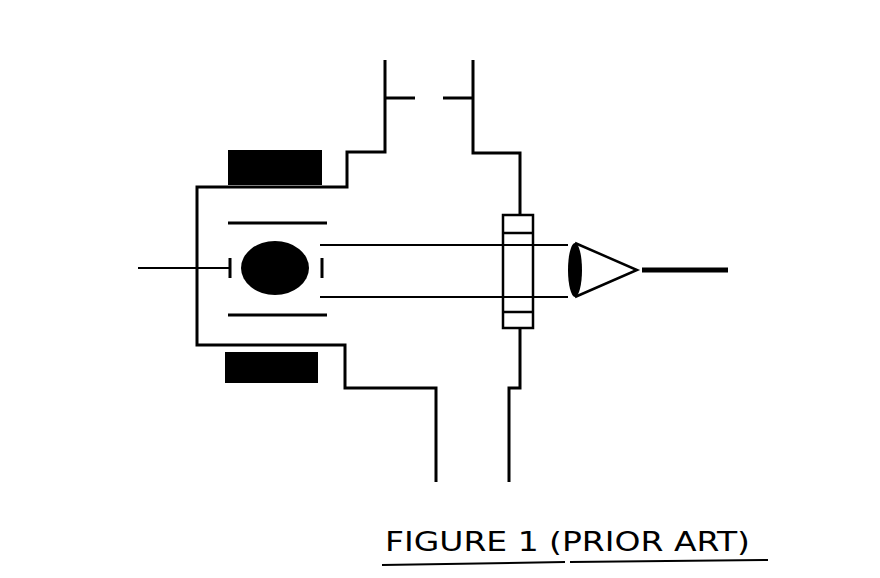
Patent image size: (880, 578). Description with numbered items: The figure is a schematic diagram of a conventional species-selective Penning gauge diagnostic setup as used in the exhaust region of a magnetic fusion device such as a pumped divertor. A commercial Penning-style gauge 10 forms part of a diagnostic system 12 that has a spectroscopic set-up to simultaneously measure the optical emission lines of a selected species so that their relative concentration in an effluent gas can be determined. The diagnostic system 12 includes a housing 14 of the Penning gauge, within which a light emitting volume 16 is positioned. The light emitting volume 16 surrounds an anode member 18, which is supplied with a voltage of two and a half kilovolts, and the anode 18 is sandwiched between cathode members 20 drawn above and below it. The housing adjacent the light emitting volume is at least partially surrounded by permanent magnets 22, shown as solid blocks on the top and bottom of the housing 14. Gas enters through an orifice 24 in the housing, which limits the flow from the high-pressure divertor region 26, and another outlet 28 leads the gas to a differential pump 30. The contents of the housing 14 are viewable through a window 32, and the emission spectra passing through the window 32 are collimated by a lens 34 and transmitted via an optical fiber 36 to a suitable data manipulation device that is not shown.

The Penning-style gauge 10 is at (122, 336).
The diagnostic system 12 is at (570, 122).
The housing 14 is at (207, 348).
The light emitting volume 16 is at (310, 252).
The anode member 18 is at (324, 275).
The cathode members 20 is at (323, 218).
The permanent magnets 22 is at (259, 148).
The orifice 24 is at (429, 99).
The high-pressure (divertor) region 26 is at (443, 79).
The outlet 28 is at (459, 381).
The differential pump 30 is at (484, 466).
The window 32 is at (533, 228).
The lens 34 is at (587, 268).
The optical fiber 36 is at (718, 265).